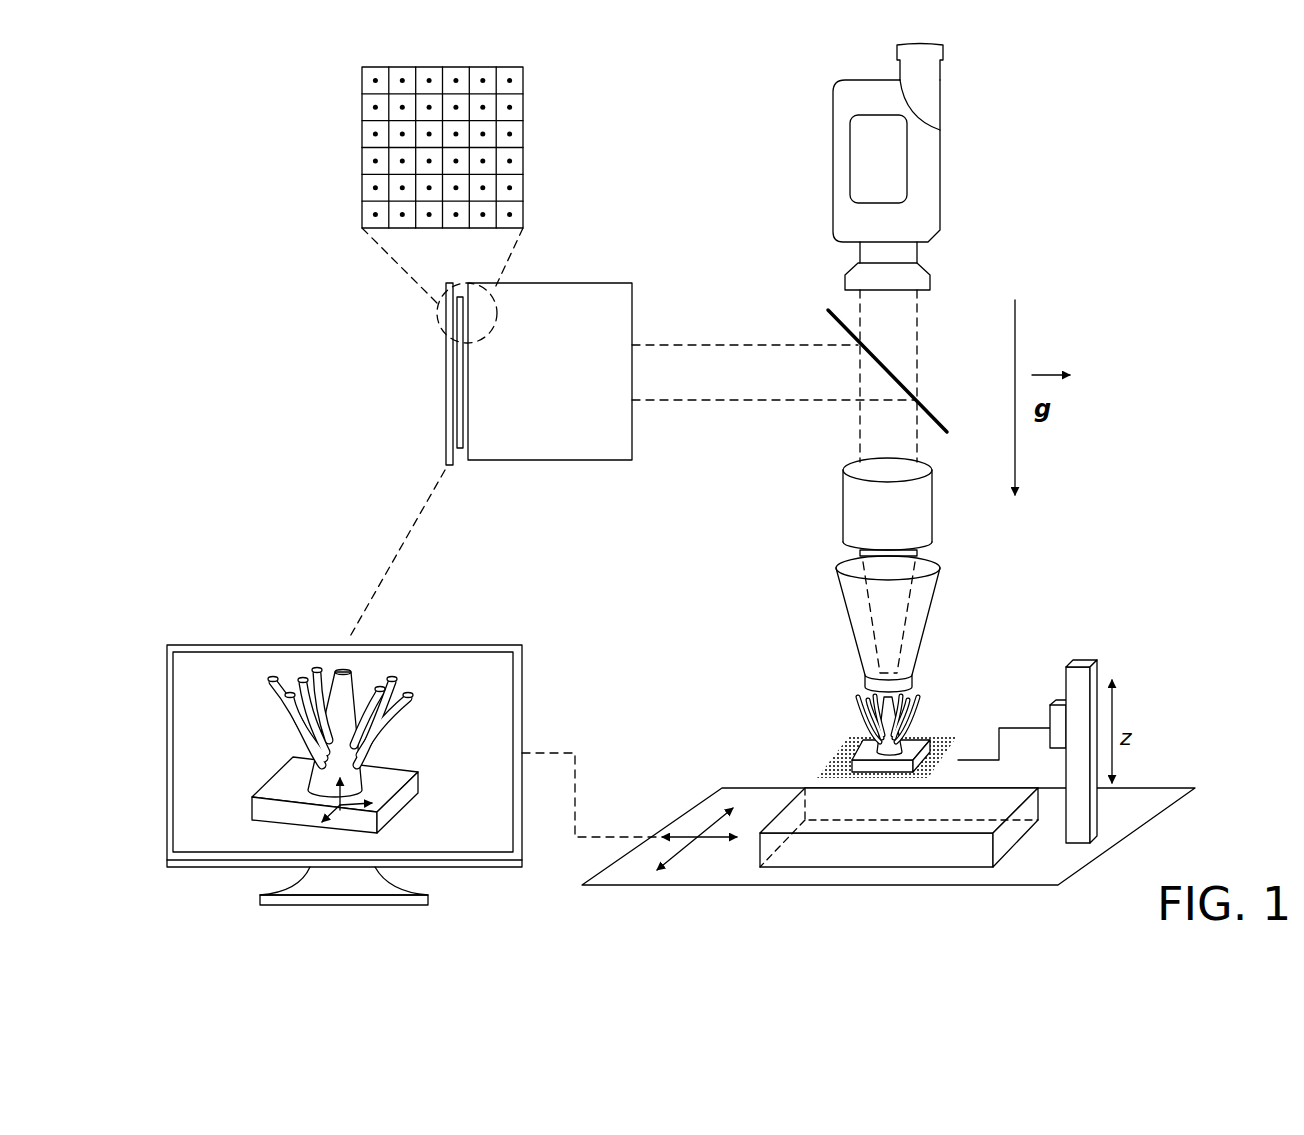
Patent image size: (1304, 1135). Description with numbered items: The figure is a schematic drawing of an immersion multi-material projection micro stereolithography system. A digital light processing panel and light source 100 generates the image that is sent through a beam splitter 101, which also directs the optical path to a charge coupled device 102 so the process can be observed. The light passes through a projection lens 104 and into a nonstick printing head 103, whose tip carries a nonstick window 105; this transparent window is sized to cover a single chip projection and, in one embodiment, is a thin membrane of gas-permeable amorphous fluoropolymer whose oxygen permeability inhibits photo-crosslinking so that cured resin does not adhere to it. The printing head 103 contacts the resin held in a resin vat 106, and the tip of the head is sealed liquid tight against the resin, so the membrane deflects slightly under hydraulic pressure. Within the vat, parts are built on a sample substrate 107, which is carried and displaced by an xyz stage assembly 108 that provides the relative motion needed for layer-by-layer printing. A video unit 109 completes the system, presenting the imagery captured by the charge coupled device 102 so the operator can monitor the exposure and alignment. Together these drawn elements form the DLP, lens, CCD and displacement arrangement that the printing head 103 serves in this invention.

The digital light processing panel and light source 100 is at (588, 283).
The beam splitter 101 is at (828, 310).
The charge coupled device 102 is at (937, 178).
The nonstick printing head 103 is at (942, 616).
The projection lens 104 is at (843, 500).
The nonstick window 105 is at (858, 682).
The resin vat 106 is at (770, 795).
The sample substrate 107 is at (834, 755).
The xyz stage assembly 108 is at (860, 886).
The video unit 109 is at (298, 905).